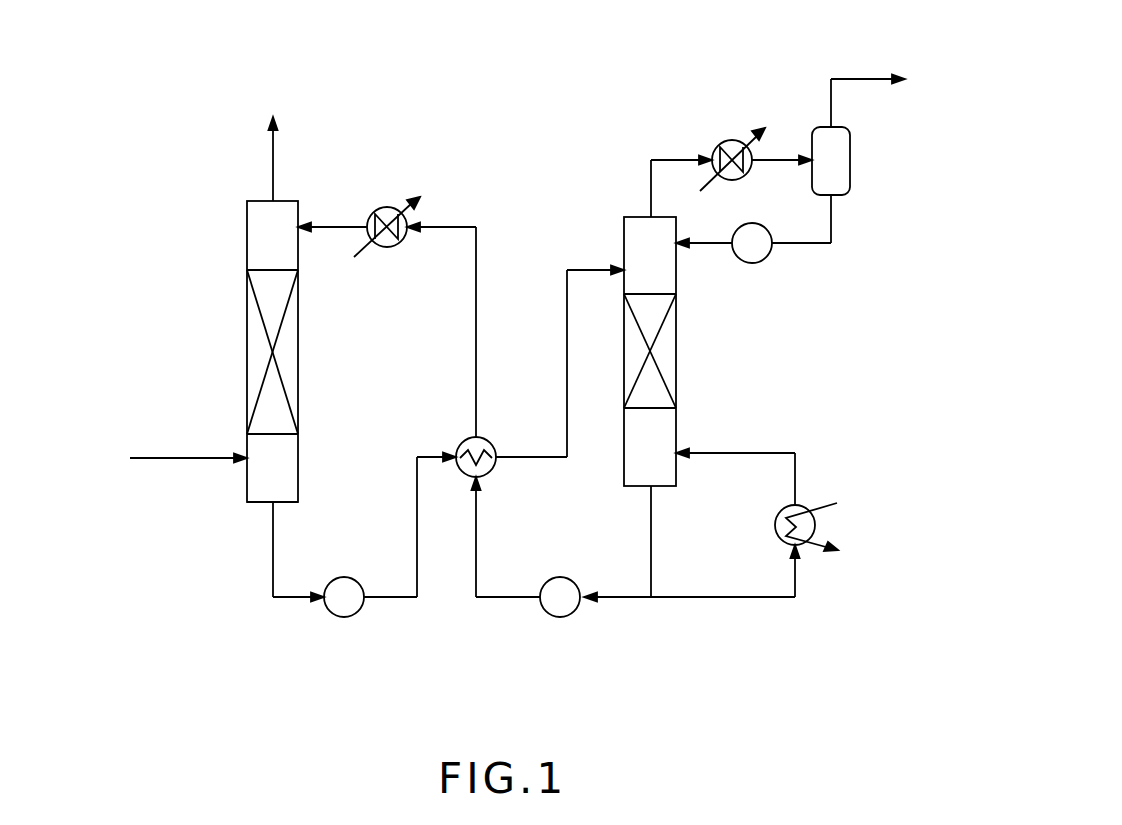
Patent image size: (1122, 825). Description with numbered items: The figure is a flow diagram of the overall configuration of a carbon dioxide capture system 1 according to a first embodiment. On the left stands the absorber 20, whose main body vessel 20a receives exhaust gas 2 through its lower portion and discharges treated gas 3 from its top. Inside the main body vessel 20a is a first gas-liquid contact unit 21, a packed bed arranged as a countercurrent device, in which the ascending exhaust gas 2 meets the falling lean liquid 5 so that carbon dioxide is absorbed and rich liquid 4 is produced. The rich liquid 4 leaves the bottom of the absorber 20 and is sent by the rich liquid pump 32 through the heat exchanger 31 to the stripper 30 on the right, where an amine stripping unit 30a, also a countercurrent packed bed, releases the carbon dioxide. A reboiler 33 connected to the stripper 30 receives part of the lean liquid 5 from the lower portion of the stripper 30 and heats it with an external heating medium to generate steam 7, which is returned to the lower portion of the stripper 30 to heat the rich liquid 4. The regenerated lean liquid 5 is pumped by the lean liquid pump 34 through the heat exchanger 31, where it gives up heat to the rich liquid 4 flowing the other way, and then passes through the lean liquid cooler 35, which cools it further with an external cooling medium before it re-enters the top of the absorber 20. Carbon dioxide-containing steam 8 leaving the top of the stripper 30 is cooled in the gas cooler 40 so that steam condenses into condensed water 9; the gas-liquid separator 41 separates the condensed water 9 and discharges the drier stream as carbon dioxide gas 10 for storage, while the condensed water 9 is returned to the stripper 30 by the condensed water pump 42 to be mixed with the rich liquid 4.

The carbon dioxide capture system 1 is at (218, 95).
The exhaust gas 2 is at (178, 456).
The treated gas 3 is at (268, 157).
The rich liquid 4 is at (270, 556).
The lean liquid 5 is at (476, 297).
The steam 7 is at (742, 452).
The carbon dioxide-containing steam 8 is at (650, 183).
The condensed water 9 is at (832, 222).
The carbon dioxide gas 10 is at (862, 77).
The absorber 20 is at (326, 351).
The main body vessel 20a is at (300, 463).
The first gas-liquid contact unit 21 is at (290, 352).
The stripper 30 is at (702, 351).
The amine stripping unit 30a is at (705, 379).
The heat exchanger 31 is at (490, 440).
The rich liquid pump 32 is at (347, 577).
The reboiler 33 is at (775, 527).
The lean liquid pump 34 is at (562, 577).
The lean liquid cooler 35 is at (387, 206).
The gas cooler 40 is at (735, 140).
The gas-liquid separator 41 is at (852, 160).
The condensed water pump 42 is at (765, 260).